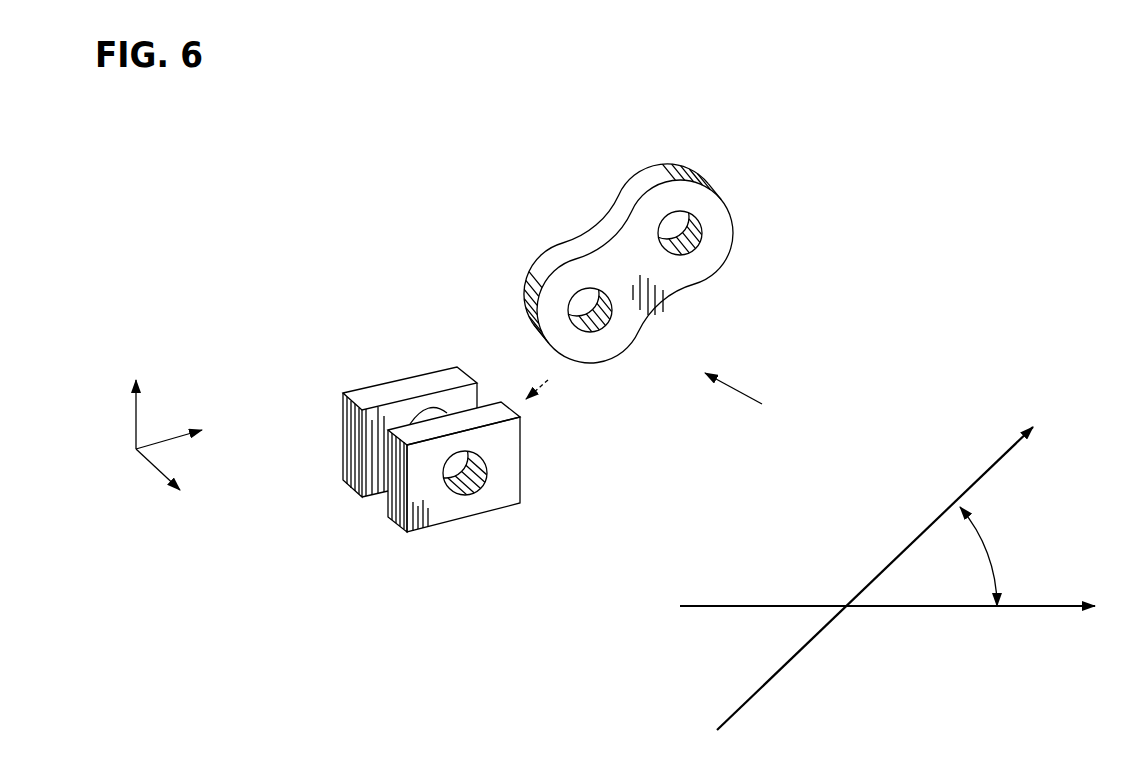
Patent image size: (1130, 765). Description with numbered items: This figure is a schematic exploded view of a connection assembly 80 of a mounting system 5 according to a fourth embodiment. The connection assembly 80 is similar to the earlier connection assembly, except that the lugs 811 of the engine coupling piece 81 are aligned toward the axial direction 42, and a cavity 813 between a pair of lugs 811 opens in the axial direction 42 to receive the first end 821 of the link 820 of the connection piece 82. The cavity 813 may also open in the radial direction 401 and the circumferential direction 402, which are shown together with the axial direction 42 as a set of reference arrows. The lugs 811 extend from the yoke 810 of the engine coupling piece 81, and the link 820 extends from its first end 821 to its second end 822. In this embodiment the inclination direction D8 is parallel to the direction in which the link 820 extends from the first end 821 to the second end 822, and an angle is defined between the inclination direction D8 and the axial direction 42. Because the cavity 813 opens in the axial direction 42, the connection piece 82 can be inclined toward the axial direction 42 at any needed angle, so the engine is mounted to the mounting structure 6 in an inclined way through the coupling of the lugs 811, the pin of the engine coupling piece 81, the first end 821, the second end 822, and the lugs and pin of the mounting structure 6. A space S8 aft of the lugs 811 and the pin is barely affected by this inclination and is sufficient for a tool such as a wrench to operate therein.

The mounting system 5 is at (452, 162).
The mounting structure 6 is at (673, 125).
The connection assembly 80 is at (312, 302).
The engine coupling piece 81 is at (280, 578).
The connection piece 82 is at (585, 195).
The yoke 810 is at (375, 502).
The lugs 811 is at (352, 442).
The cavity 813 is at (468, 400).
The link 820 is at (717, 202).
The first end 821 is at (586, 343).
The second end 822 is at (703, 235).
The radial direction 401 is at (136, 415).
The circumferential direction 402 is at (150, 468).
The axial direction 42 is at (163, 442).
The space S8 is at (749, 403).
The inclination direction D8 is at (978, 480).